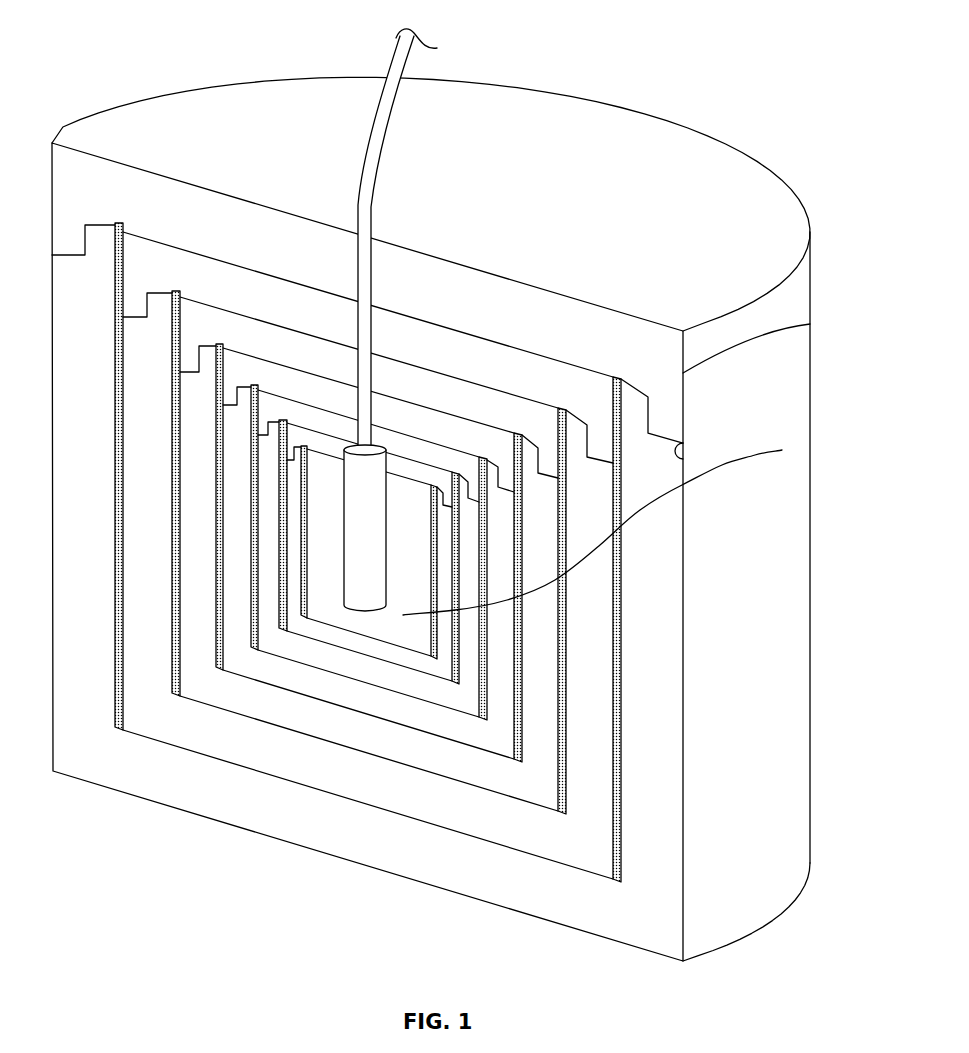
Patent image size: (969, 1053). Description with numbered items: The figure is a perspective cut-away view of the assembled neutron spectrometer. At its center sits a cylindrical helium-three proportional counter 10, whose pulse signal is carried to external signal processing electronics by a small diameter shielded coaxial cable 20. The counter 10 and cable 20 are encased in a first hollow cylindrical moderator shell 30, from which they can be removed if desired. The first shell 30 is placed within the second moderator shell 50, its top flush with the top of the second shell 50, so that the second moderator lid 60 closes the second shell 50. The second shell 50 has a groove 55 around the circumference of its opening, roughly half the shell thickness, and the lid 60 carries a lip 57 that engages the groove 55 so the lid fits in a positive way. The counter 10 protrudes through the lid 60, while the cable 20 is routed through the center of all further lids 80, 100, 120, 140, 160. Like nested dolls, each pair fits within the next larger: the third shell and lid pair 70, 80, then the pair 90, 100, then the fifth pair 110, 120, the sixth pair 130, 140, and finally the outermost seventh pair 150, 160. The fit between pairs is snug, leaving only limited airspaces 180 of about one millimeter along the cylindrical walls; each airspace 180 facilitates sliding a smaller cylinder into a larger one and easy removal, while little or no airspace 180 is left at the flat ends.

The Helium-3 proportional counter 10 is at (357, 593).
The shielded coaxial cable 20 is at (392, 68).
The first moderator shell 30 is at (683, 459).
The second moderator shell 50 is at (443, 645).
The groove 55 is at (683, 443).
The lip 57 is at (812, 322).
The second moderator lid 60 is at (318, 440).
The third moderator shell 70 is at (468, 683).
The third moderator lid 80 is at (397, 440).
The fourth moderator shell 90 is at (500, 738).
The fourth moderator lid 100 is at (427, 420).
The fifth moderator shell 110 is at (542, 792).
The fifth moderator lid 120 is at (473, 397).
The sixth moderator shell 130 is at (598, 839).
The sixth moderator lid 140 is at (540, 370).
The seventh moderator shell 150 is at (655, 885).
The seventh moderator lid 160 is at (672, 413).
The airspace 180 is at (304, 575).